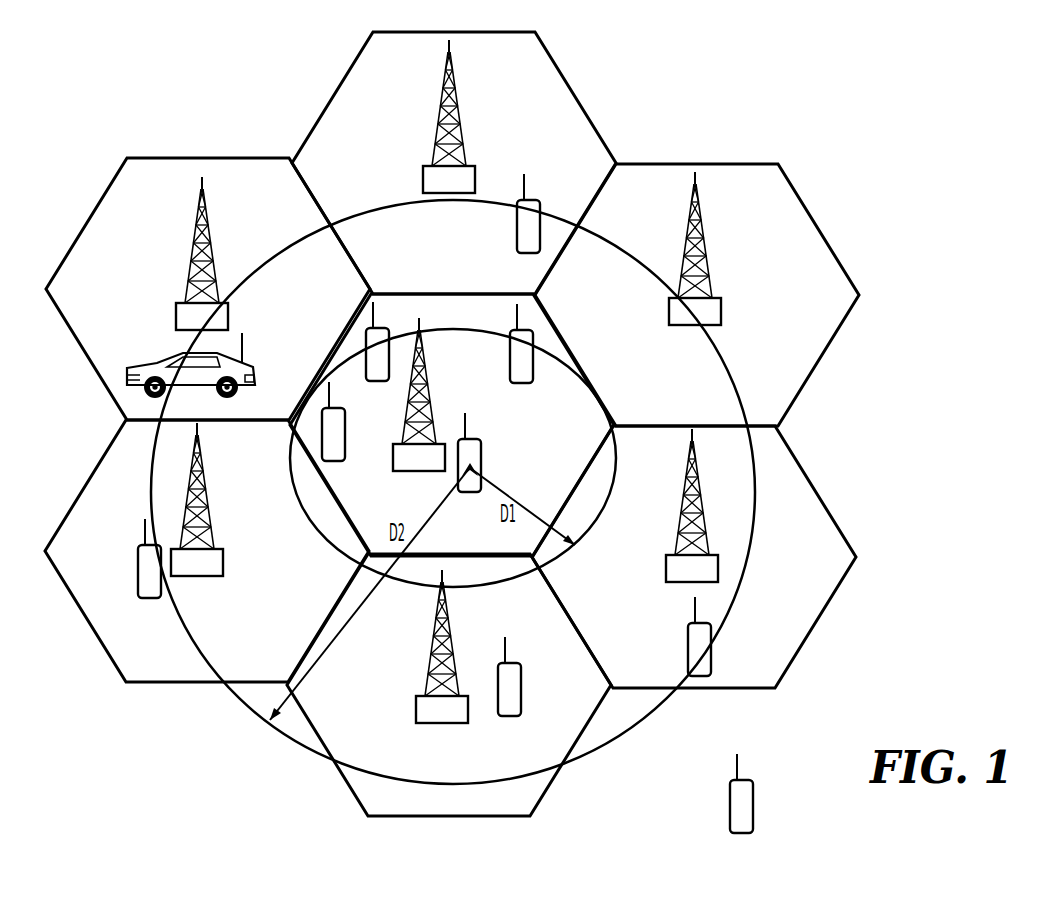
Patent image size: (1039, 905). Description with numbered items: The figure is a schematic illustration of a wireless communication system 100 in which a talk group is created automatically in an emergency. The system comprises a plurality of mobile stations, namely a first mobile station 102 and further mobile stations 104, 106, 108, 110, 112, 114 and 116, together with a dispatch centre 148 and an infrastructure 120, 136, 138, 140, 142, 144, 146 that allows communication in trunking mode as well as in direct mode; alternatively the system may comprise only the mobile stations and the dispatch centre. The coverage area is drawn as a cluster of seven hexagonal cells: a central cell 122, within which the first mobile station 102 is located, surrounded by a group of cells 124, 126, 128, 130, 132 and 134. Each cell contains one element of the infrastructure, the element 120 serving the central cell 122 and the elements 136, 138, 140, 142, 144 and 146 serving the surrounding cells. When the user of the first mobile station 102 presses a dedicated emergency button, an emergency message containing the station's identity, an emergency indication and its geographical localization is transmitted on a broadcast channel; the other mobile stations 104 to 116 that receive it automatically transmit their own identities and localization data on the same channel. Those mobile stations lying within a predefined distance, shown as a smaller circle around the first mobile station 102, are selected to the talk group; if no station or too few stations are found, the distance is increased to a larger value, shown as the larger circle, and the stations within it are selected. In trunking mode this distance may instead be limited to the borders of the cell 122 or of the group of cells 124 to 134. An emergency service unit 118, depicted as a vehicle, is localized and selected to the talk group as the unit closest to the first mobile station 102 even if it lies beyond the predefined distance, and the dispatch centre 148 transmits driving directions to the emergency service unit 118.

The wireless communication system 100 is at (900, 709).
The first mobile station 102 is at (482, 442).
The mobile station 104 is at (519, 380).
The mobile station 106 is at (522, 676).
The mobile station 108 is at (753, 795).
The mobile station 110 is at (345, 430).
The mobile station 112 is at (385, 379).
The mobile station 114 is at (518, 235).
The mobile station 116 is at (153, 598).
The emergency service unit 118 is at (151, 366).
The infrastructure 120 is at (412, 472).
The cell 122 is at (565, 477).
The cell 124 is at (814, 220).
The cell 126 is at (576, 66).
The cell 128 is at (96, 210).
The cell 130 is at (85, 485).
The cell 132 is at (345, 783).
The cell 134 is at (812, 485).
The infrastructure 136 is at (702, 250).
The infrastructure 138 is at (488, 156).
The infrastructure 140 is at (191, 249).
The infrastructure 142 is at (224, 559).
The infrastructure 144 is at (420, 724).
The infrastructure 146 is at (670, 581).
The dispatch centre 148 is at (712, 657).